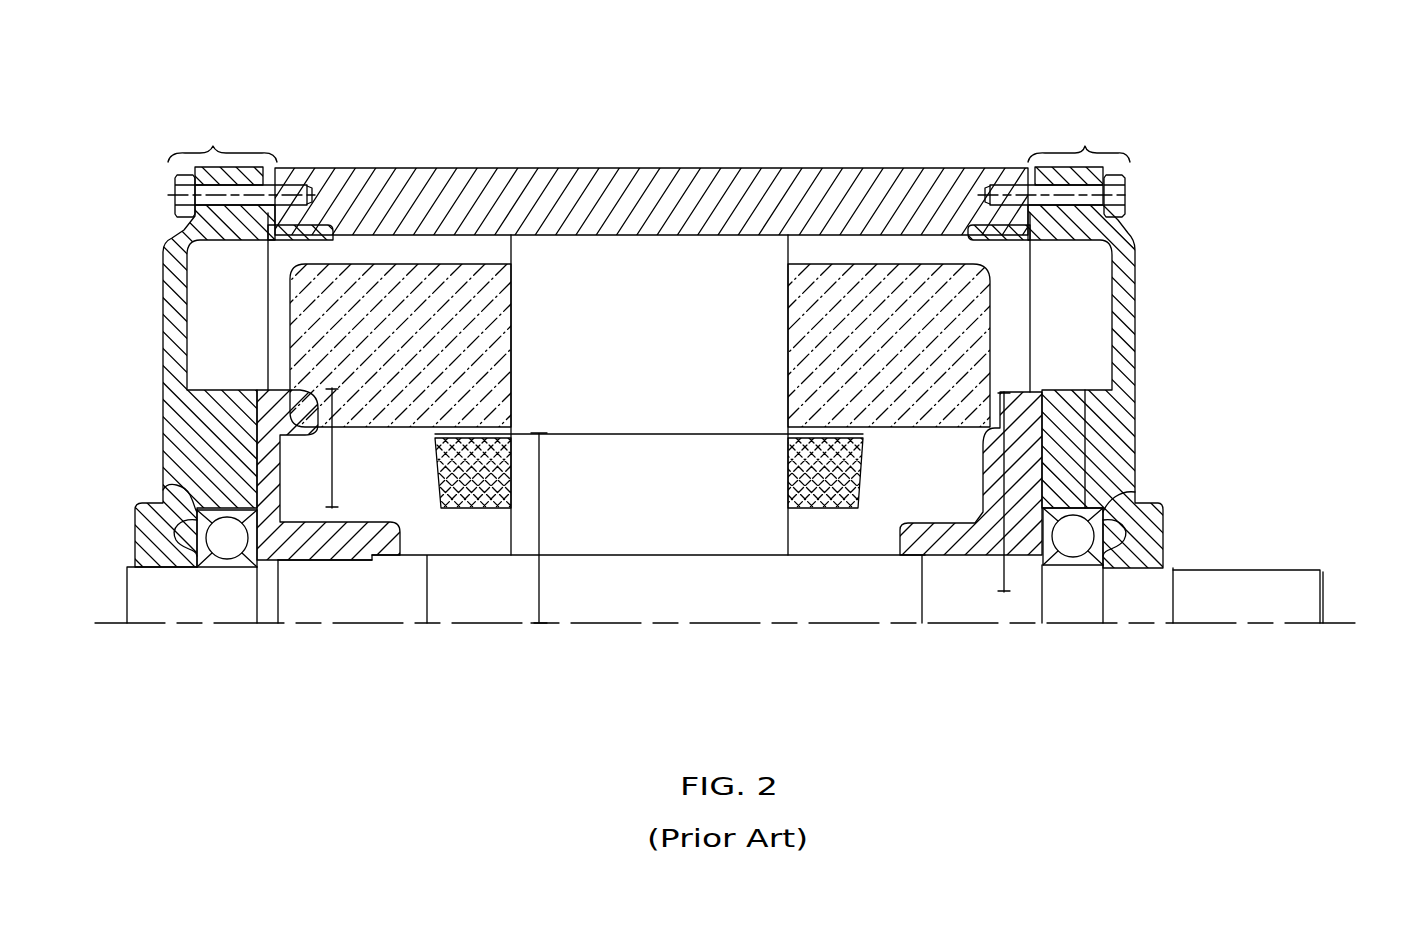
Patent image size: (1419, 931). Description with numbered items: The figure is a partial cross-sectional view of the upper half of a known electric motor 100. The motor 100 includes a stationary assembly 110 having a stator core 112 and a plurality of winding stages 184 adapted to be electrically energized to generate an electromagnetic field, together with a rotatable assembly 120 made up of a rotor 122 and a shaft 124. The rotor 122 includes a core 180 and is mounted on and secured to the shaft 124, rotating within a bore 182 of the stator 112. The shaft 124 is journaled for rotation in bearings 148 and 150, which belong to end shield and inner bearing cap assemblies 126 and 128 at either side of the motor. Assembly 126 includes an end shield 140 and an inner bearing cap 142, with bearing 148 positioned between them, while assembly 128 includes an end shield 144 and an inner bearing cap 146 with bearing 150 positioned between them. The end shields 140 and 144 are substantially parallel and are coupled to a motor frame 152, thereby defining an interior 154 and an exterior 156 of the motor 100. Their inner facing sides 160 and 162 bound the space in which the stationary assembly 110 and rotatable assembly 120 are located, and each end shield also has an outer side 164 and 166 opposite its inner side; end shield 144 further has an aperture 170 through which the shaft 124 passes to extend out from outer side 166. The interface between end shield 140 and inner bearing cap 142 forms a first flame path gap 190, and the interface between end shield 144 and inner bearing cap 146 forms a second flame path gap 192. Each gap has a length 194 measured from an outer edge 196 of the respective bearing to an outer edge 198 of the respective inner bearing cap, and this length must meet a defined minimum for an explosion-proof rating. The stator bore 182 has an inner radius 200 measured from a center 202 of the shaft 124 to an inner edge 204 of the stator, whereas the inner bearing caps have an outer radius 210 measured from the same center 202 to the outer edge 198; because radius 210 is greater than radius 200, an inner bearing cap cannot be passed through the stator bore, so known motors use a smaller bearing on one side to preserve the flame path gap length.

The electric motor 100 is at (1097, 95).
The stationary assembly 110 is at (845, 167).
The stator core 112 is at (570, 226).
The rotatable assembly 120 is at (358, 455).
The rotor 122 is at (508, 524).
The shaft 124 is at (1273, 570).
The end shield and inner bearing cap assembly 126 is at (244, 167).
The end shield and inner bearing cap assembly 128 is at (1054, 167).
The end shield 140 is at (145, 503).
The inner bearing cap 142 is at (338, 562).
The end shield 144 is at (1136, 390).
The inner bearing cap 146 is at (945, 558).
The bearing 148 is at (205, 568).
The bearing 150 is at (1045, 568).
The motor frame 152 is at (390, 168).
The interior 154 is at (1092, 277).
The exterior 156 is at (1279, 130).
The inner facing side 160 is at (187, 304).
The inner facing side 162 is at (1113, 333).
The outer side 164 is at (163, 375).
The outer side 166 is at (1136, 291).
The aperture 170 is at (1182, 632).
The core 180 is at (790, 515).
The bore 182 is at (962, 478).
The winding stages 184 is at (937, 264).
The first flame path gap 190 is at (262, 400).
The second flame path gap 192 is at (1026, 396).
The length 194 is at (333, 485).
The outer edge 196 is at (165, 496).
The outer edge 198 is at (259, 391).
The inner radius 200 is at (540, 592).
The center 202 is at (1323, 623).
The inner edge 204 is at (750, 435).
The outer radius 210 is at (280, 594).